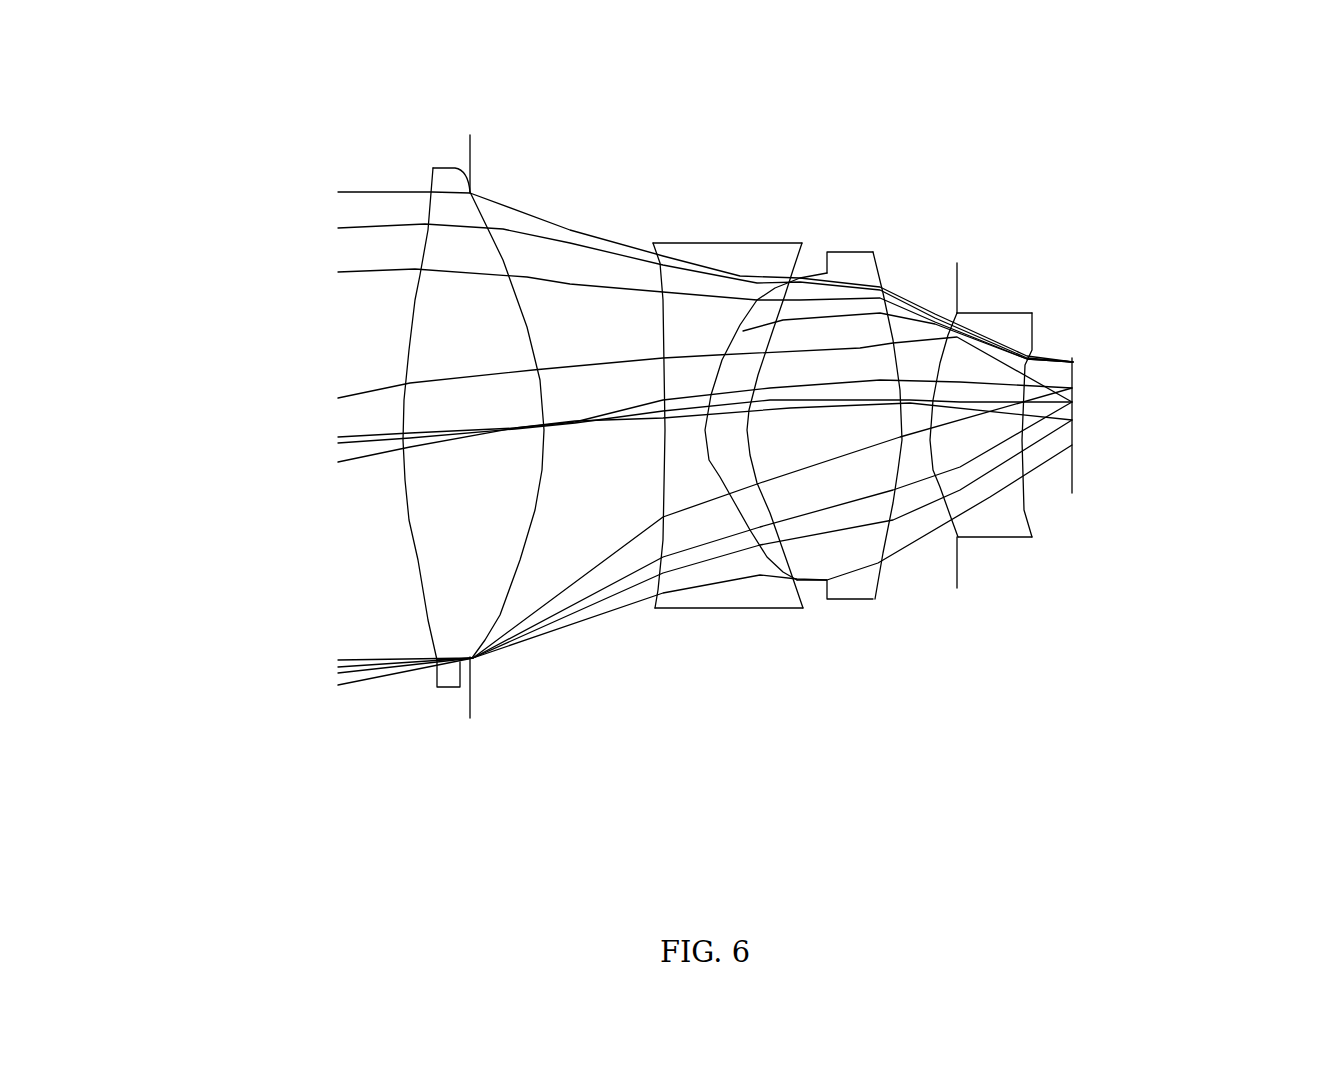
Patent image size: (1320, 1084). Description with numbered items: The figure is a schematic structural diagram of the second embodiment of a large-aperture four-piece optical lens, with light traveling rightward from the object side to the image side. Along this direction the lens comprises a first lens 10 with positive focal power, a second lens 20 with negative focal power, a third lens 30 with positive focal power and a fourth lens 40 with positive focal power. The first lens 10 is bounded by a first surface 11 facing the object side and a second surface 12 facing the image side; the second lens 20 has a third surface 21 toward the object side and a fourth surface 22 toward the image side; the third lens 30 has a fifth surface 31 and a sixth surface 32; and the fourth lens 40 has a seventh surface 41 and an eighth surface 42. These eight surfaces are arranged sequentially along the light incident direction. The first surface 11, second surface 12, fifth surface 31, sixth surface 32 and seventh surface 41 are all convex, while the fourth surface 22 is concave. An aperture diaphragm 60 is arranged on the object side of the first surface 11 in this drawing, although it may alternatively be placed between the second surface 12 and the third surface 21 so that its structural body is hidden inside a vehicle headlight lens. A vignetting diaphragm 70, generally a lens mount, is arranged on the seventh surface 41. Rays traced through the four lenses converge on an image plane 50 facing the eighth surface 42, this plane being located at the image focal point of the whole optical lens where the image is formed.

The first lens 10 is at (357, 488).
The first surface 11 is at (395, 550).
The second surface 12 is at (357, 425).
The second lens 20 is at (486, 526).
The third surface 21 is at (417, 425).
The fourth surface 22 is at (486, 425).
The third lens 30 is at (846, 530).
The fifth surface 31 is at (766, 532).
The sixth surface 32 is at (903, 491).
The fourth lens 40 is at (1031, 342).
The seventh surface 41 is at (935, 345).
The eighth surface 42 is at (1045, 501).
The image plane 50 is at (1089, 436).
The aperture diaphragm 60 is at (455, 146).
The vignetting diaphragm 70 is at (970, 574).